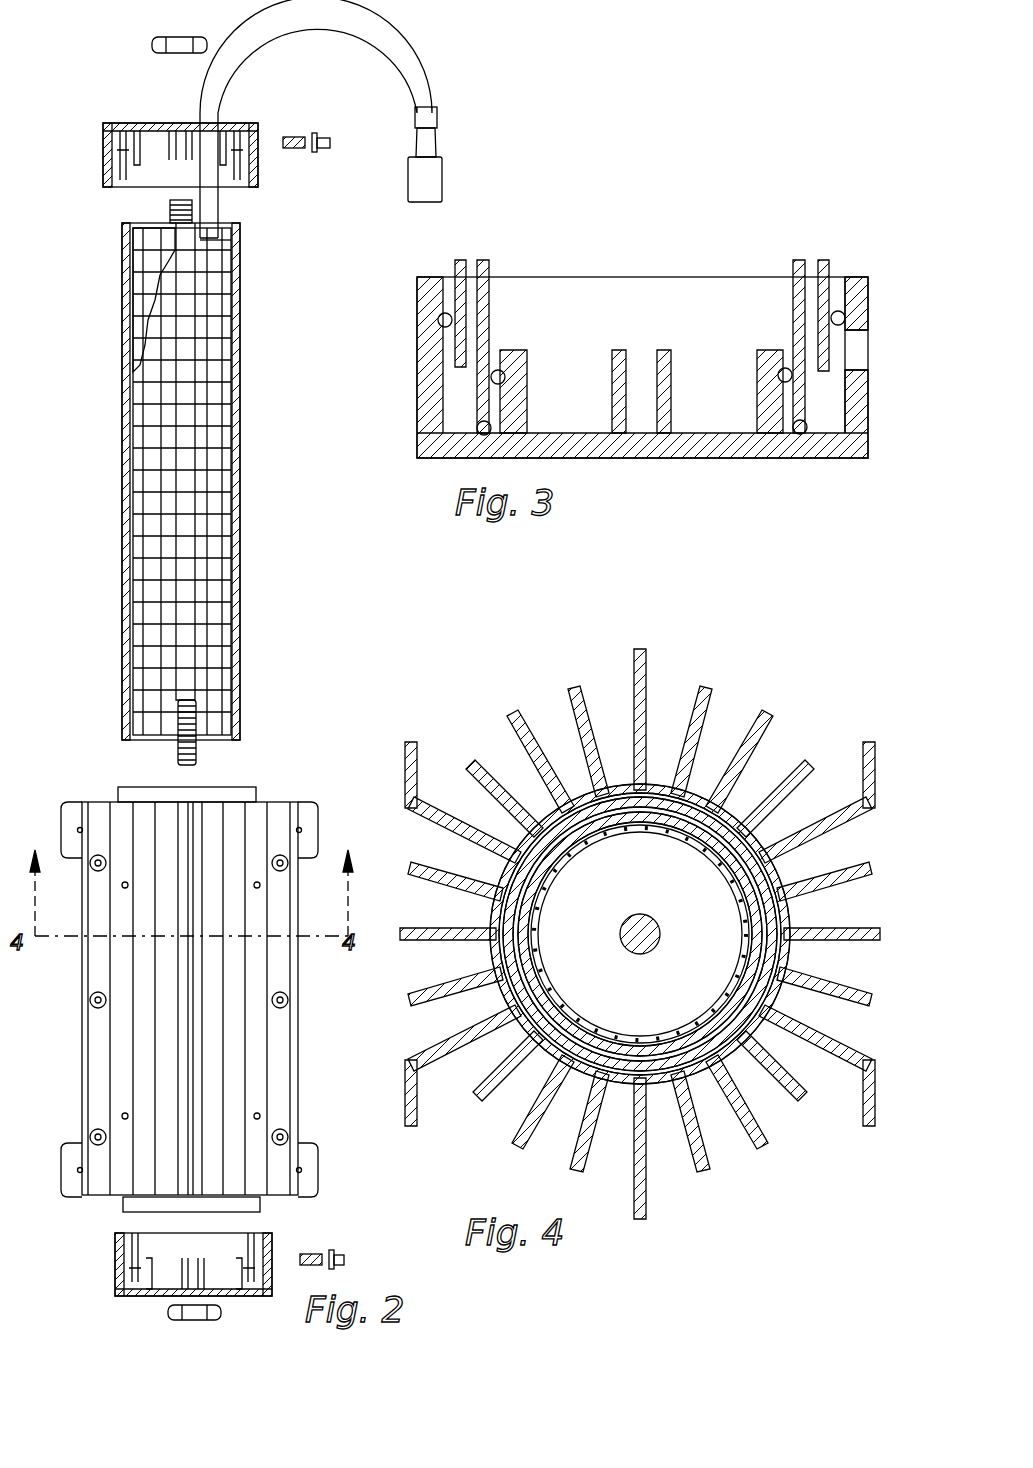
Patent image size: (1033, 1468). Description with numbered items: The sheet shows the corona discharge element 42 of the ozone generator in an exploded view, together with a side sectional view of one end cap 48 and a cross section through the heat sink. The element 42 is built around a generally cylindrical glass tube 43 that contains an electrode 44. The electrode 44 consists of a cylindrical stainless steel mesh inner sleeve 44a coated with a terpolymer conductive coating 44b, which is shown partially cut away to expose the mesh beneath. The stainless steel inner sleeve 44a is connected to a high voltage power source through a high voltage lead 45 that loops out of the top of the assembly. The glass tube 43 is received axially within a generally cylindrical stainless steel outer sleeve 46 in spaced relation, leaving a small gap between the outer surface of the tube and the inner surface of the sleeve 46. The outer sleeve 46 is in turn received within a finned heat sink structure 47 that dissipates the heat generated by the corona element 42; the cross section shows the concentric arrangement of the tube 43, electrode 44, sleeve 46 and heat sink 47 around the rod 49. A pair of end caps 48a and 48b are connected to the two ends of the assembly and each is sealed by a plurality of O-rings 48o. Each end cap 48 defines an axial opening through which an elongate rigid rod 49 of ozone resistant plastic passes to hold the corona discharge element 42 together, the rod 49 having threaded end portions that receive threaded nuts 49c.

In FIG. 2, the corona discharge element 42 is at (224, 482).
In FIG. 2, the glass tube 43 is at (242, 500).
In FIG. 3, the glass tube 43 is at (460, 262).
In FIG. 4, the glass tube 43 is at (663, 1045).
In FIG. 2, the electrode 44 is at (225, 600).
In FIG. 4, the electrode 44 is at (700, 1050).
In FIG. 2, the stainless steel mesh inner sleeve 44a is at (215, 268).
In FIG. 2, the terpolymer conductive coating 44b is at (133, 262).
In FIG. 2, the high voltage lead 45 is at (348, 18).
In FIG. 2, the outer sleeve 46 is at (250, 787).
In FIG. 3, the outer sleeve 46 is at (490, 262).
In FIG. 4, the outer sleeve 46 is at (730, 1030).
In FIG. 2, the heat sink structure 47 is at (318, 1048).
In FIG. 4, the heat sink structure 47 is at (633, 666).
In FIG. 3, the end cap 48 is at (792, 455).
In FIG. 2, the end cap 48a is at (125, 130).
In FIG. 2, the end cap 48b is at (115, 1272).
In FIG. 3, the O-rings 48o is at (480, 425).
In FIG. 2, the elongate rigid rod 49 is at (185, 355).
In FIG. 4, the elongate rigid rod 49 is at (655, 917).
In FIG. 2, the threaded nuts 49c is at (152, 43).